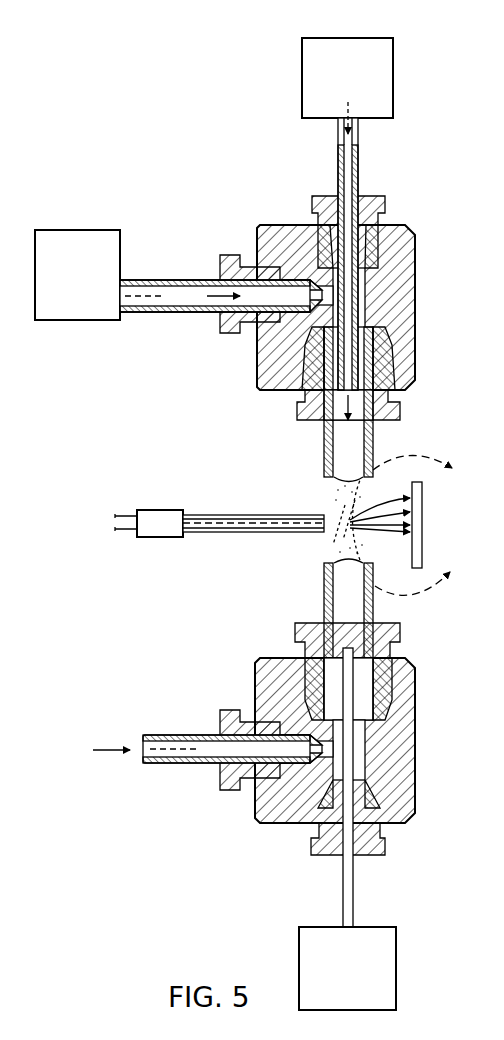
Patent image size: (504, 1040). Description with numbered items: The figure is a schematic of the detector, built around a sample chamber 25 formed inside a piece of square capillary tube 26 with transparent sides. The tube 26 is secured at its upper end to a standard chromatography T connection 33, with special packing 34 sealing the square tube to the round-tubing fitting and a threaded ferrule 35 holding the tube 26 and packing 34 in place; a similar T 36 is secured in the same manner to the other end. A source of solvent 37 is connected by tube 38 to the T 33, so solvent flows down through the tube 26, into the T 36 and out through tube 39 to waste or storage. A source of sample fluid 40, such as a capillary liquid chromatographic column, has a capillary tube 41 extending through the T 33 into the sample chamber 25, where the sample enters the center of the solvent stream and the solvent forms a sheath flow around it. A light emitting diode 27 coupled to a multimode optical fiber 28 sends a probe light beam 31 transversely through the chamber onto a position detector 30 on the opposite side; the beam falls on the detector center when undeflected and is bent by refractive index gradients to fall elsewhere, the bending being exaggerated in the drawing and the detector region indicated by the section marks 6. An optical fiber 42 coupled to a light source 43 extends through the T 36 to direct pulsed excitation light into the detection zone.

The sample chamber 25 is at (330, 450).
The square capillary tube 26 is at (325, 586).
The light emitting diode 27 is at (160, 510).
The multimode optical fiber 28 is at (215, 532).
The position detector 30 is at (422, 520).
The probe light beam 31 is at (400, 508).
The T connection 33 is at (415, 268).
The packing 34 is at (383, 343).
The threaded ferrule 35 is at (400, 410).
The T connection 36 is at (415, 730).
The source of solvent 37 is at (78, 238).
The tube 38 is at (150, 280).
The tube 39 is at (160, 735).
The source of sample fluid 40 is at (383, 80).
The capillary tube 41 is at (358, 160).
The optical fiber 42 is at (353, 893).
The light source 43 is at (382, 973).
The position detector enlargement 6 is at (422, 525).